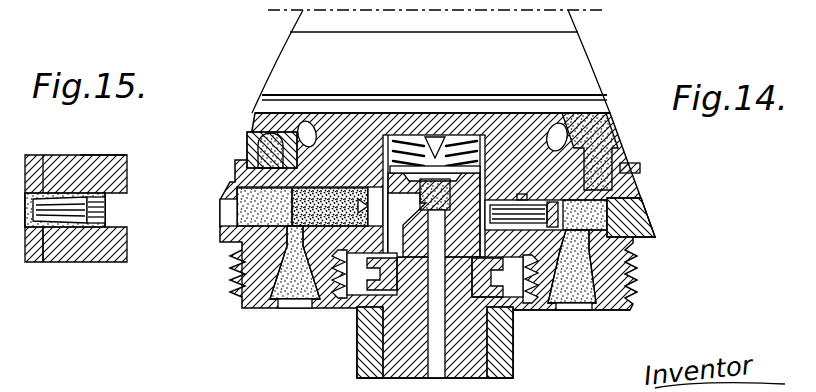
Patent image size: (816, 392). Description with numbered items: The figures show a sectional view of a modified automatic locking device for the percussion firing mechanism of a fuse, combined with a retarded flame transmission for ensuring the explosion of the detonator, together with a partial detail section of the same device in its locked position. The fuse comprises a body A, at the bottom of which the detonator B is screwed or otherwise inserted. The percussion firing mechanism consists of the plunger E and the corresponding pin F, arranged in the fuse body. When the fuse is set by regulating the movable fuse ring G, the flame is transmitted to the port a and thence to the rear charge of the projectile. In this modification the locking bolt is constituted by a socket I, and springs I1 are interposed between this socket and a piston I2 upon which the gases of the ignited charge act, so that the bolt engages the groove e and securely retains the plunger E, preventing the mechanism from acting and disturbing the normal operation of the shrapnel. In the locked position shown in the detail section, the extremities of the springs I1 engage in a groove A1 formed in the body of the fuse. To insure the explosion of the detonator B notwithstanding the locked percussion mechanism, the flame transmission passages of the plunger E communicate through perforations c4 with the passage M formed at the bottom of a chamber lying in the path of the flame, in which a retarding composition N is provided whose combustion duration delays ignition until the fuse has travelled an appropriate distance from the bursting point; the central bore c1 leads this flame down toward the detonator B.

In FIG. 14, the movable fuse ring G is at (255, 128).
In FIG. 14, the retarding composition N is at (237, 207).
In FIG. 15, the body A is at (73, 257).
In FIG. 14, the body A is at (238, 262).
In FIG. 14, the port a is at (270, 282).
In FIG. 14, the passage M is at (305, 300).
In FIG. 14, the threaded portion c4 is at (360, 310).
In FIG. 15, the plunger E is at (33, 263).
In FIG. 14, the plunger E is at (410, 356).
In FIG. 14, the central bore c1 is at (440, 361).
In FIG. 14, the detonator B is at (513, 372).
In FIG. 15, the groove A1 is at (98, 157).
In FIG. 14, the groove A1 is at (527, 309).
In FIG. 15, the piston I2 is at (106, 205).
In FIG. 14, the piston I2 is at (650, 206).
In FIG. 14, the pin F is at (437, 150).
In FIG. 14, the groove e is at (488, 168).
In FIG. 15, the socket I is at (50, 158).
In FIG. 14, the socket I is at (502, 200).
In FIG. 15, the springs I1 is at (76, 228).
In FIG. 14, the springs I1 is at (525, 194).